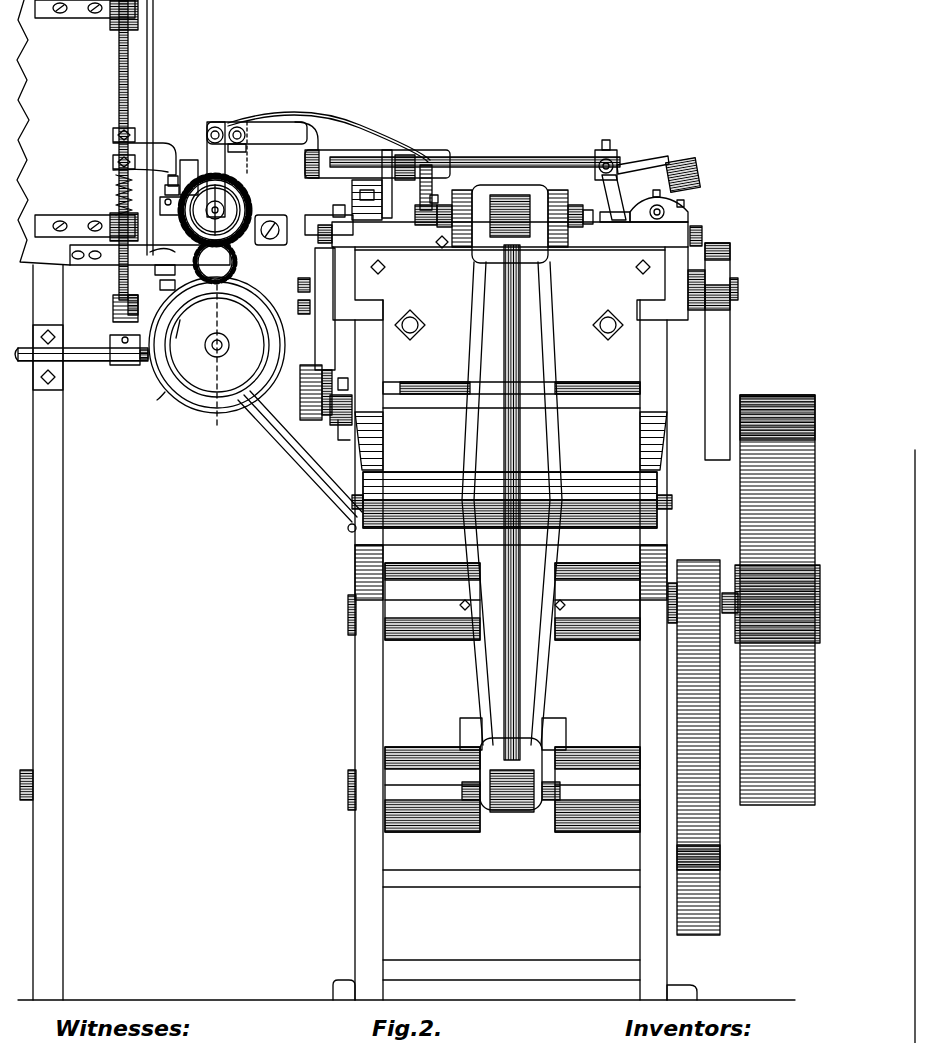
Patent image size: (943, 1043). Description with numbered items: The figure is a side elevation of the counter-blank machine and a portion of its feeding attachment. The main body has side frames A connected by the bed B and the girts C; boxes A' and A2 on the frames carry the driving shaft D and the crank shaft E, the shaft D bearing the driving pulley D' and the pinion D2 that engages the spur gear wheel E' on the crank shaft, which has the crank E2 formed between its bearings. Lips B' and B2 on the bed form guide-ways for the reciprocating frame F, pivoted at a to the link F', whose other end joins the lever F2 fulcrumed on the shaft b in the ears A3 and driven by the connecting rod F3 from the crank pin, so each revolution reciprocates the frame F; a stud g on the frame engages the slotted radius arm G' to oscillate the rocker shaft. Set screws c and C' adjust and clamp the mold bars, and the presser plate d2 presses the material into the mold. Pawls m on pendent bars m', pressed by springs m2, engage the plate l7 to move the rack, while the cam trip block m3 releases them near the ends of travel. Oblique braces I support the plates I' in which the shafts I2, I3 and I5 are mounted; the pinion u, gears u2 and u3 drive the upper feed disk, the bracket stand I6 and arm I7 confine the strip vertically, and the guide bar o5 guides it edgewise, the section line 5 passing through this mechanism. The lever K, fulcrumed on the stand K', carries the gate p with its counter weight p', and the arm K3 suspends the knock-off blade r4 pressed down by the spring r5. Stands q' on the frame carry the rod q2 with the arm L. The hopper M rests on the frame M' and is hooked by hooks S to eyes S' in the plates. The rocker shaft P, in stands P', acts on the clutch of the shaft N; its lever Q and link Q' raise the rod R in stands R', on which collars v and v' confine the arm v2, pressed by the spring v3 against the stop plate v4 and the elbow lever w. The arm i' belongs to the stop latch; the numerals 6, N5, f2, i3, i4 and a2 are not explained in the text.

The hopper M is at (85, 132).
The frame M' is at (56, 632).
The stands R' is at (86, 120).
The vertical rod R is at (113, 150).
The collar v is at (116, 135).
The collar v' is at (115, 162).
The arm v2 is at (145, 155).
The spring v3 is at (113, 195).
The stop plate v4 is at (165, 190).
The elbow lever w is at (160, 203).
The hooks S is at (150, 255).
The eyes S' is at (159, 276).
The pinion u is at (162, 290).
The lever Q is at (125, 343).
The link Q' is at (115, 314).
The rocker shaft P is at (81, 367).
The stands P' is at (59, 357).
The shaft I5 is at (226, 208).
The gear u3 is at (214, 210).
The gear u2 is at (215, 262).
The plates I' is at (233, 195).
The section line 5 is at (216, 126).
The guide bar o5 is at (228, 145).
The stand K' is at (257, 169).
The lever K is at (451, 152).
The arm K3 is at (356, 156).
The spring r5 is at (358, 120).
The knock-off blade r4 is at (418, 195).
The bracket f2 is at (362, 197).
The arm i' is at (335, 203).
The bolt i3 is at (444, 204).
The pin i4 is at (442, 208).
The arm I7 is at (312, 230).
The bolt a2 is at (335, 234).
The bracket stand I6 is at (298, 290).
The shaft I3 is at (212, 355).
The shaft N is at (217, 345).
The shaft I2 is at (230, 345).
The section line 6 is at (188, 331).
The wheel rim N5 is at (151, 402).
The oblique braces I is at (300, 456).
The shaft b is at (348, 510).
The pendent bars m' is at (326, 309).
The springs m2 is at (307, 388).
The cam trip block m3 is at (340, 395).
The pawls m is at (311, 392).
The steel plate l7 is at (343, 438).
The reciprocating frame F is at (510, 271).
The pivot a is at (604, 197).
The arm L is at (607, 215).
The gate p is at (606, 158).
The counter weight p' is at (669, 174).
The stands q' is at (671, 217).
The rod q2 is at (658, 220).
The presser plate d2 is at (707, 232).
The stud g is at (721, 290).
The radius arm G' is at (717, 351).
The bed B is at (510, 625).
The lip B' is at (391, 271).
The lip B2 is at (648, 274).
The set screws C' is at (509, 325).
The set screws c is at (452, 388).
The link F' is at (522, 202).
The lever F2 is at (512, 502).
The connecting rod F3 is at (511, 789).
The crank E2 is at (560, 740).
The side frames A is at (406, 660).
The ears A3 is at (383, 455).
The girts C is at (563, 684).
The boxes A' is at (512, 589).
The driving shaft D is at (529, 586).
The pinion D2 is at (695, 568).
The spur gear wheel E' is at (709, 860).
The driving pulley D' is at (777, 600).
The boxes A2 is at (405, 745).
The crank shaft E is at (338, 790).